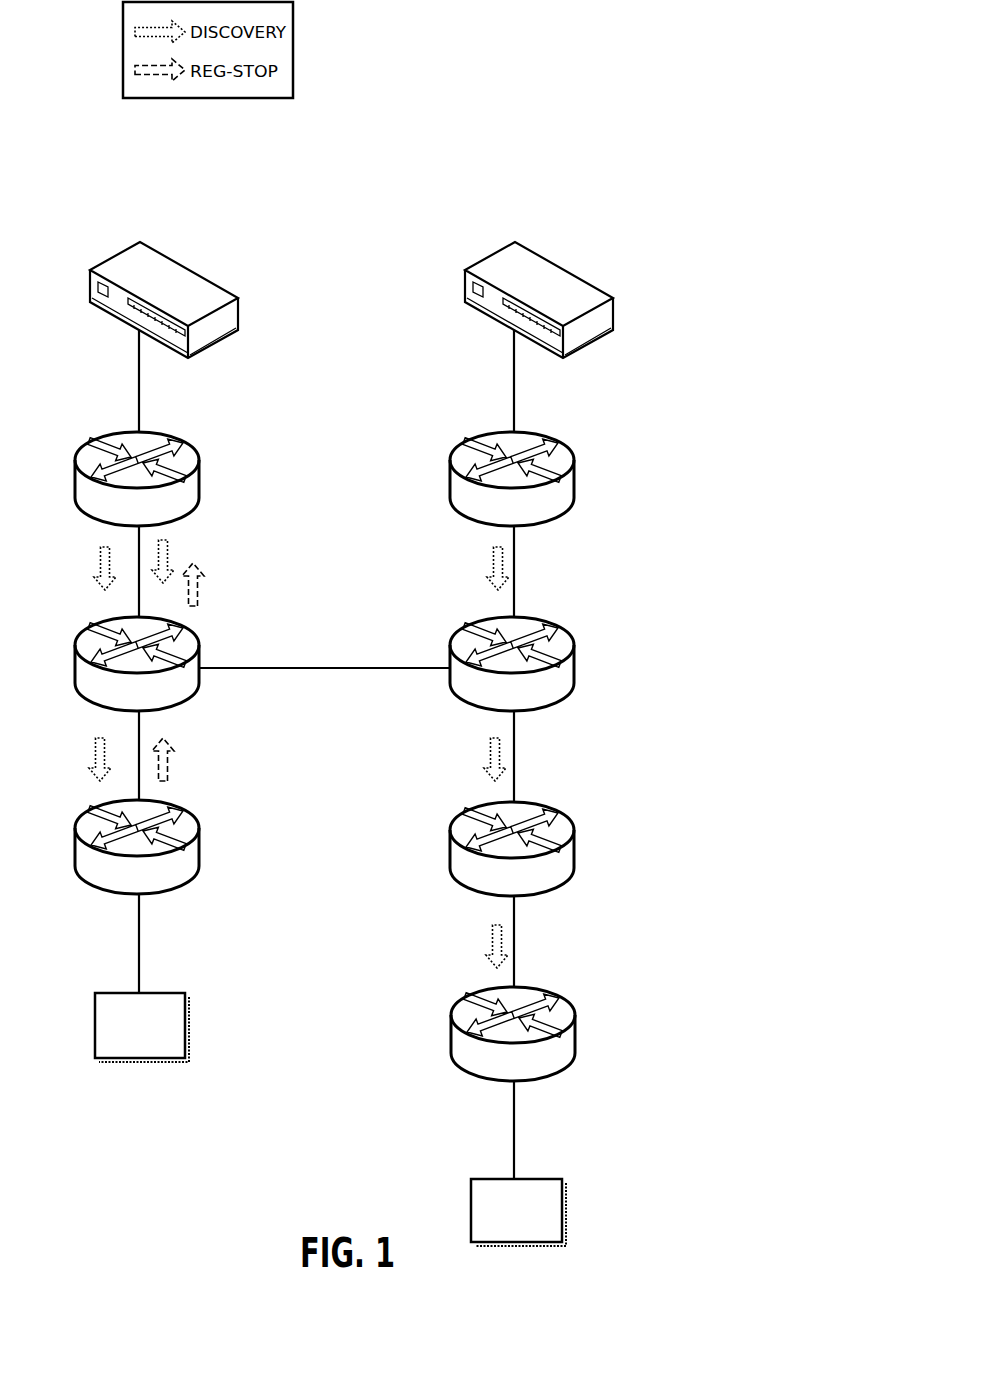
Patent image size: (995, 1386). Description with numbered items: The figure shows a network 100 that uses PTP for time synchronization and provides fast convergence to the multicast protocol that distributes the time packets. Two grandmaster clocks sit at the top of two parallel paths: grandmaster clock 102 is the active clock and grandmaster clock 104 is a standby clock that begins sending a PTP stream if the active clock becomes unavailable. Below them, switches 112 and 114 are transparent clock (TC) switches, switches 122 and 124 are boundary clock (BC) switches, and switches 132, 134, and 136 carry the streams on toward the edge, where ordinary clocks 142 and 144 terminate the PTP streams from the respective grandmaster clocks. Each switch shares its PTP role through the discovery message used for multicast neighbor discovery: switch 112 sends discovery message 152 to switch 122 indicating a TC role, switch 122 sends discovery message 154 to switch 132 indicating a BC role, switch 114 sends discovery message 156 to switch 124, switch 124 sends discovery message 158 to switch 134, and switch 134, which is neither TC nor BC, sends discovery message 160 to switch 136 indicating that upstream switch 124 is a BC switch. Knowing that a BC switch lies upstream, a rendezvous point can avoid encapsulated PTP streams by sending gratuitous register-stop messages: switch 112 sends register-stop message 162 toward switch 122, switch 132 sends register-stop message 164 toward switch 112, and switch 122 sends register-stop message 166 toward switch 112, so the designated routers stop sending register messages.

The network 100 is at (672, 93).
The grandmaster clock 102 is at (188, 262).
The grandmaster clock 104 is at (563, 262).
The switch 112 is at (199, 480).
The switch 114 is at (574, 480).
The switch 122 is at (199, 658).
The switch 124 is at (574, 660).
The switch 132 is at (199, 868).
The switch 134 is at (574, 850).
The switch 136 is at (575, 1035).
The ordinary clock 142 is at (142, 1027).
The ordinary clock 144 is at (518, 1212).
The discovery message 152 is at (98, 563).
The discovery message 154 is at (93, 755).
The discovery message 156 is at (491, 560).
The discovery message 158 is at (488, 755).
The discovery message 160 is at (490, 942).
The gratuitous register-stop message 162 is at (170, 546).
The gratuitous register-stop message 164 is at (170, 766).
The gratuitous register-stop message 166 is at (199, 588).